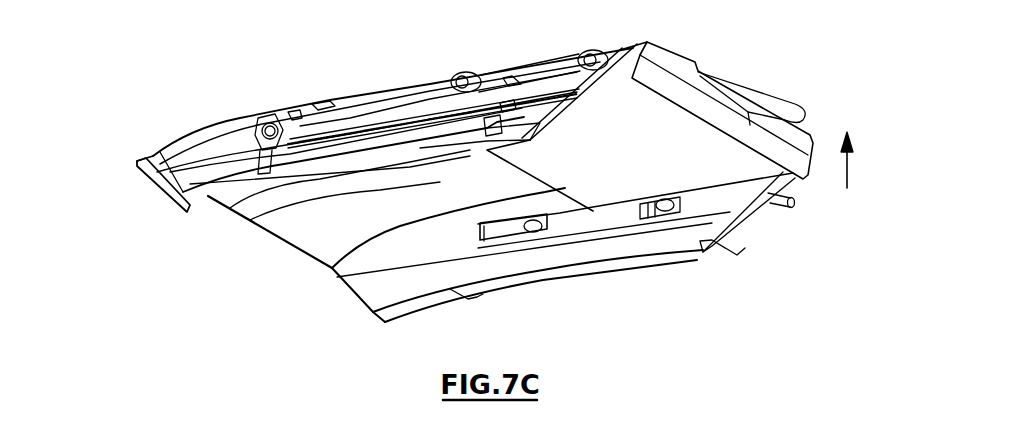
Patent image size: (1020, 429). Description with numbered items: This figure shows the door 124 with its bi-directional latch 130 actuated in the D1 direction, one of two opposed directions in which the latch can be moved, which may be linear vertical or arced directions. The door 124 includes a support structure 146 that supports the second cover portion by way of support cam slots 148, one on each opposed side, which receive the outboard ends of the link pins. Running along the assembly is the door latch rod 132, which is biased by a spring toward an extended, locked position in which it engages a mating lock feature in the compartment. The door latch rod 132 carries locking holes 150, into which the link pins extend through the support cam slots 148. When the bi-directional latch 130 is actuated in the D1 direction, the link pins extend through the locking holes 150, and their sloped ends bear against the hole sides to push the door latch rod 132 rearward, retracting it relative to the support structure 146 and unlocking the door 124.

The door 124 is at (141, 237).
The bi-directional latch 130 is at (743, 112).
The door latch rod 132 is at (444, 97).
The support structure 146 is at (399, 247).
The support cam slots 148 is at (500, 241).
The locking holes 150 is at (517, 222).
The first direction D1 is at (847, 163).